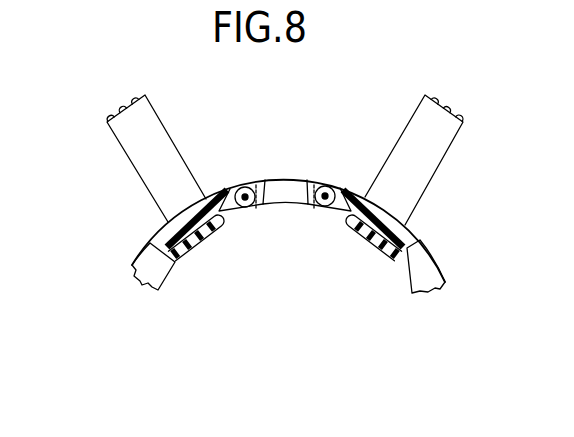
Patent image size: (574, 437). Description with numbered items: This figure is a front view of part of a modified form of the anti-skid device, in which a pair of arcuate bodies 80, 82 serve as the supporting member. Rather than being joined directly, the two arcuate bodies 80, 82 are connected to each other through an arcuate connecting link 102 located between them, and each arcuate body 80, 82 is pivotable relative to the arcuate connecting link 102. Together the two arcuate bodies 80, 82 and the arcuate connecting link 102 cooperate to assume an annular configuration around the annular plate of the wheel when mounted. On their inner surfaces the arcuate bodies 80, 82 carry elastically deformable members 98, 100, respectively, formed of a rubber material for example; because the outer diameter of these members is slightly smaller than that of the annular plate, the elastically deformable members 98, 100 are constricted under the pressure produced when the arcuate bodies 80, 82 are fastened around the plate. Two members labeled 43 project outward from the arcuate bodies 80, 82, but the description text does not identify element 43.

The support arm 43 is at (144, 166).
The arcuate body 80 is at (145, 262).
The arcuate body 82 is at (428, 273).
The elastically deformable member 98 is at (168, 275).
The elastically deformable member 100 is at (405, 278).
The arcuate connecting link 102 is at (283, 190).